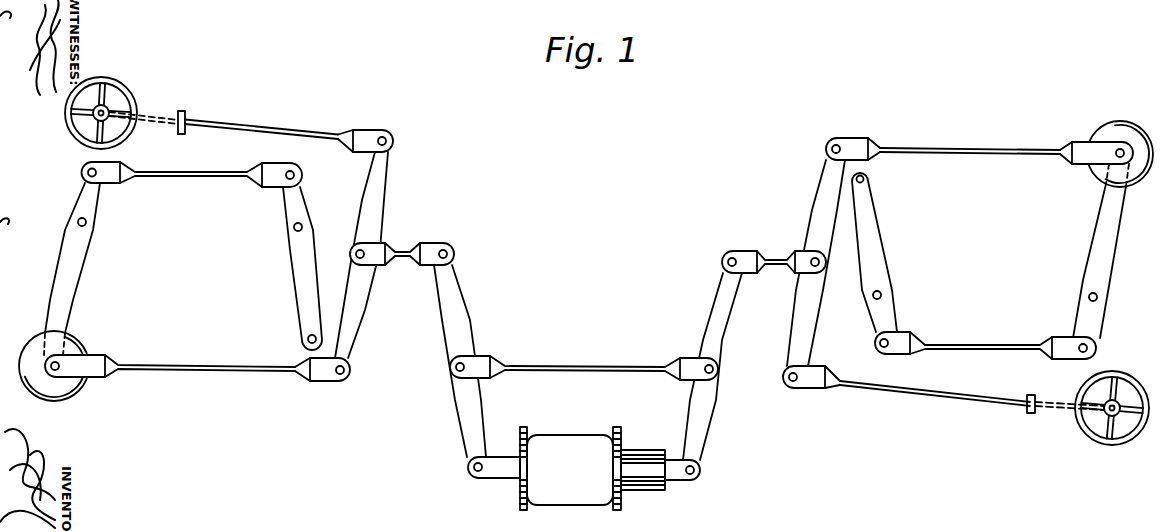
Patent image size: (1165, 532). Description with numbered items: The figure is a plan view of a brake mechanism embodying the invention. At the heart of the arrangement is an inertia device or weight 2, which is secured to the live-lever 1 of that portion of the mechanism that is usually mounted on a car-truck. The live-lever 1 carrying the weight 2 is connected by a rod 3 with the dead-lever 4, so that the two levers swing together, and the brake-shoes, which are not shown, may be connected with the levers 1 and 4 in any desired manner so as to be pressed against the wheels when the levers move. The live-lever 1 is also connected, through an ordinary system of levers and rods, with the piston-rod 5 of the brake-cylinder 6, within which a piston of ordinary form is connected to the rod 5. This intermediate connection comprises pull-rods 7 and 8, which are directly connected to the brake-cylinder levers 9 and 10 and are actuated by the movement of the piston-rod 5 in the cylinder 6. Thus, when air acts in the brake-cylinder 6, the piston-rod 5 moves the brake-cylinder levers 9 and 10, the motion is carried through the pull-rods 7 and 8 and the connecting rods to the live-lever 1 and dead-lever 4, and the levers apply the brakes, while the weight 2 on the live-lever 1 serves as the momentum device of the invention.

The live-lever 1 is at (78, 291).
The inertia device or weight 2 is at (70, 392).
The rod 3 is at (181, 178).
The dead-lever 4 is at (286, 275).
The piston-rod 5 is at (676, 482).
The brake-cylinder 6 is at (570, 468).
The pull-rod 7 is at (776, 260).
The pull-rod 8 is at (406, 251).
The brake-cylinder lever 9 is at (732, 323).
The brake-cylinder lever 10 is at (443, 322).